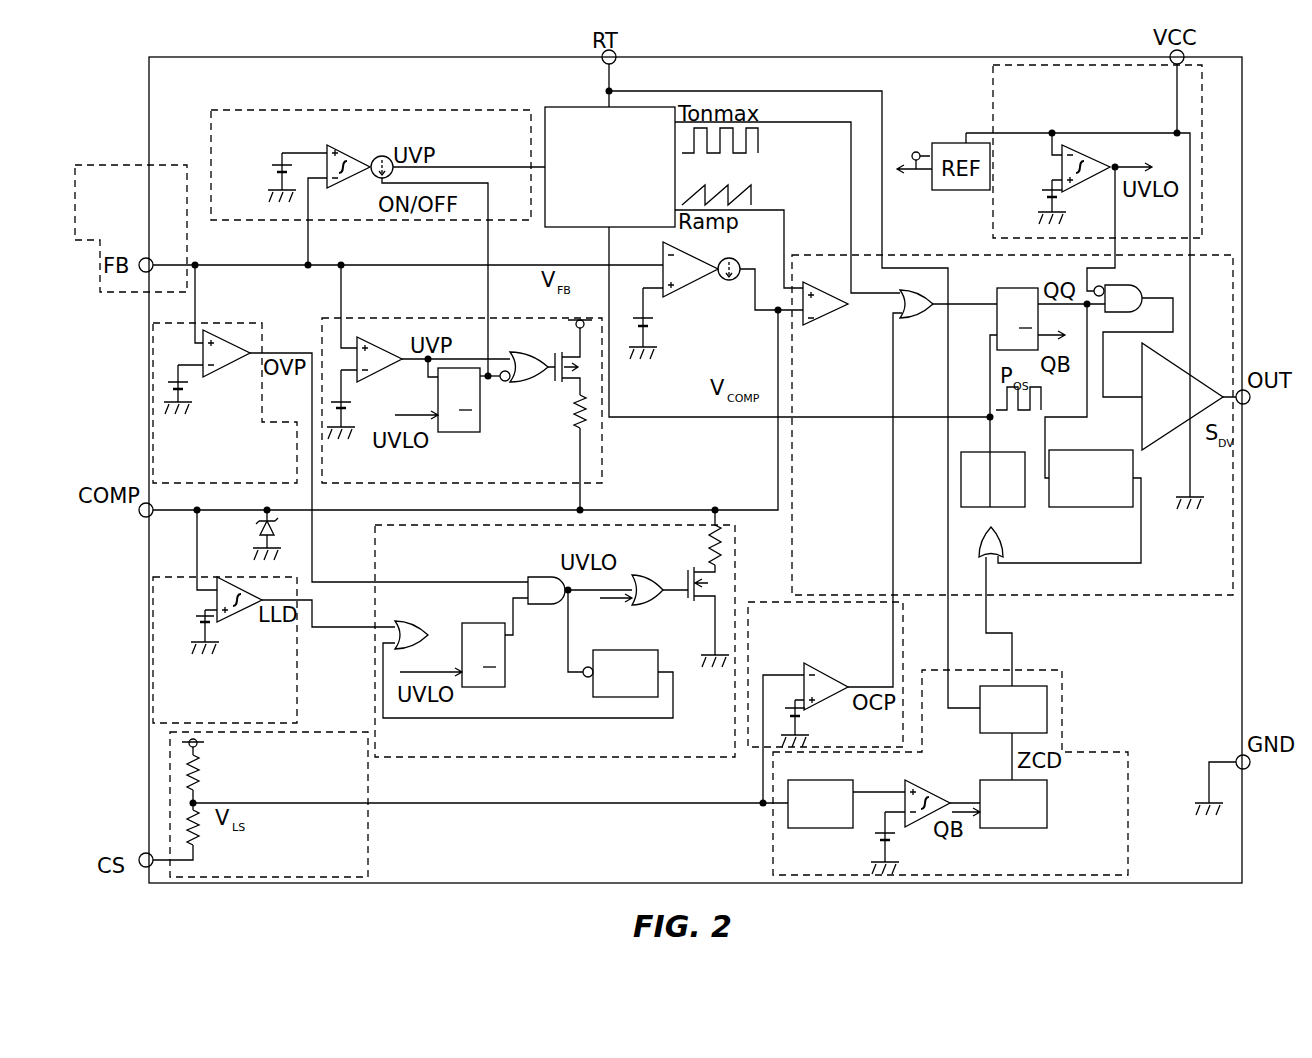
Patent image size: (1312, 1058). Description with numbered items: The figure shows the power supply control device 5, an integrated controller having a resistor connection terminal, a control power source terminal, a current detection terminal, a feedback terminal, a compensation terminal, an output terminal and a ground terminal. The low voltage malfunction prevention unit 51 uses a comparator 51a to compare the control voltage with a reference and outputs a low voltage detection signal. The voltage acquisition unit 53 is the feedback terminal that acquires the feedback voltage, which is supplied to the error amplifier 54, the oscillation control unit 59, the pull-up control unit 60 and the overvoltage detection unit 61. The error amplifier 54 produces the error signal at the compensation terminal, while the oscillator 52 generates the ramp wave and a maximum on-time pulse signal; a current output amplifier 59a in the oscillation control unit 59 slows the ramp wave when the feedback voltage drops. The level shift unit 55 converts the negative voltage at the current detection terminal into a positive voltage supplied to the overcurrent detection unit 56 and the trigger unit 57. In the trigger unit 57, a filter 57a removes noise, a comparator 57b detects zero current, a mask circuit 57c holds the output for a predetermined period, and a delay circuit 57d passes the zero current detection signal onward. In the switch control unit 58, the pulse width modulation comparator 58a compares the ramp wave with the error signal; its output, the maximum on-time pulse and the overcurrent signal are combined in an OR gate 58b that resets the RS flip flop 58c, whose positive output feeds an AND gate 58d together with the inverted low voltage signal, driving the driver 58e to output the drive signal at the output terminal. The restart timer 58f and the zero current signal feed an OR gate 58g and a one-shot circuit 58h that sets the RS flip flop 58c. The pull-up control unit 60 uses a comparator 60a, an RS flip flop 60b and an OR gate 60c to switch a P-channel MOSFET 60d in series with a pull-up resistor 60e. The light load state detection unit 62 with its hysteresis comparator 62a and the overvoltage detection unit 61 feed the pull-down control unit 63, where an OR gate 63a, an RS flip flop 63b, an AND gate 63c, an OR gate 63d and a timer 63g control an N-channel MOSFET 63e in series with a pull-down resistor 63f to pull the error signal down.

The power supply control device 5 is at (398, 55).
The low voltage malfunction prevention unit 51 is at (1029, 63).
The comparator 51a is at (1075, 188).
The oscillator 52 is at (580, 106).
The voltage acquisition unit 53 is at (133, 162).
The error amplifier 54 is at (705, 282).
The level shift unit 55 is at (369, 822).
The overcurrent detection unit 56 is at (770, 598).
The trigger unit 57 is at (1120, 750).
The filter 57a is at (785, 825).
The comparator 57b is at (935, 785).
The mask circuit 57c is at (1050, 808).
The delay circuit 57d is at (972, 724).
The switch control unit 58 is at (1125, 603).
The pulse width modulation comparator 58a is at (820, 328).
The OR gate 58b is at (912, 322).
The RS flip flop 58c is at (990, 288).
The AND gate 58d is at (1148, 282).
The driver 58e is at (1158, 455).
The restart timer 58f is at (1080, 508).
The OR gate 58g is at (1008, 540).
The one-shot circuit 58h is at (1030, 452).
The oscillation control unit 59 is at (437, 108).
The current output amplifier 59a is at (335, 192).
The pull-up control unit 60 is at (450, 316).
The comparator 60a is at (385, 345).
The RS flip flop 60b is at (481, 428).
The OR gate 60c is at (525, 343).
The P-channel MOSFET 60d is at (560, 386).
The pull-up resistor 60e is at (588, 430).
The overvoltage detection unit 61 is at (254, 321).
The light load state detection unit 62 is at (299, 691).
The comparator 62a is at (241, 620).
The pull-down control unit 63 is at (486, 759).
The OR gate 63a is at (421, 622).
The RS flip flop 63b is at (475, 622).
The AND gate 63c is at (540, 607).
The OR gate 63d is at (640, 649).
The N-channel MOSFET 63e is at (696, 605).
The pull-down resistor 63f is at (709, 548).
The timer 63g is at (632, 603).